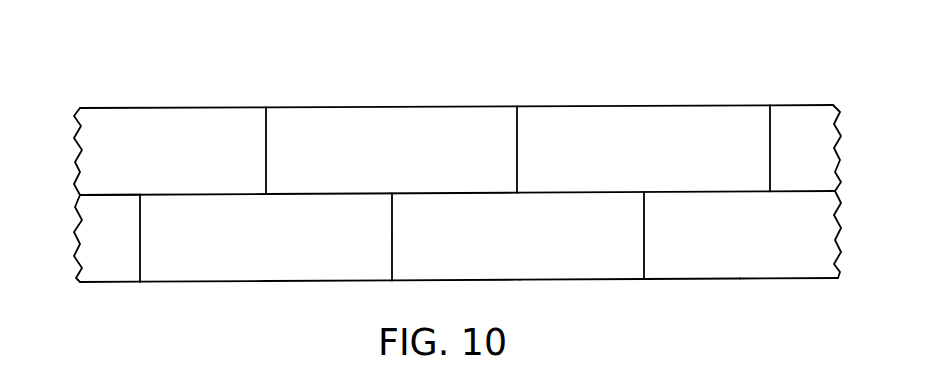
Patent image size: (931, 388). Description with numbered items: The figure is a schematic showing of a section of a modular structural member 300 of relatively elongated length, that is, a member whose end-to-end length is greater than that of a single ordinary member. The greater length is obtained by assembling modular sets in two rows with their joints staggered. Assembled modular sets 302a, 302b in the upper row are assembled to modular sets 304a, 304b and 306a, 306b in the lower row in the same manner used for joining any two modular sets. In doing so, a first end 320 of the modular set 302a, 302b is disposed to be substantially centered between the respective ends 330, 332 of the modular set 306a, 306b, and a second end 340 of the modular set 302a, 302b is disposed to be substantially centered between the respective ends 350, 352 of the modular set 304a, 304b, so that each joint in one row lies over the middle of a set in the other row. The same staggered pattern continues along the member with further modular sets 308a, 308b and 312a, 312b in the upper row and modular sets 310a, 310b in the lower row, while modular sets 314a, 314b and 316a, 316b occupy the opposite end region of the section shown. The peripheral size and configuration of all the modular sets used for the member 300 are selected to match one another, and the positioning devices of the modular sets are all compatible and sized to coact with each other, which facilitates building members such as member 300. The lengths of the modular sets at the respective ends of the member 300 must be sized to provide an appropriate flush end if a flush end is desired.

The modular structural member 300 is at (597, 78).
The modular set 302a is at (383, 117).
The modular set 302b is at (398, 117).
The modular set 304a is at (560, 273).
The modular set 304b is at (535, 272).
The modular set 306a is at (263, 273).
The modular set 306b is at (302, 273).
The modular set 308a is at (658, 117).
The modular set 308b is at (672, 117).
The modular set 310a is at (753, 253).
The modular set 310b is at (803, 262).
The modular set 312a is at (787, 110).
The modular set 312b is at (807, 110).
The modular set 314a is at (122, 130).
The modular set 314b is at (162, 130).
The modular set 316a is at (97, 273).
The modular set 316b is at (117, 272).
The first end 320 is at (267, 130).
The end 330 is at (141, 236).
The end 332 is at (392, 235).
The second end 340 is at (517, 128).
The end 350 is at (393, 255).
The end 352 is at (643, 249).